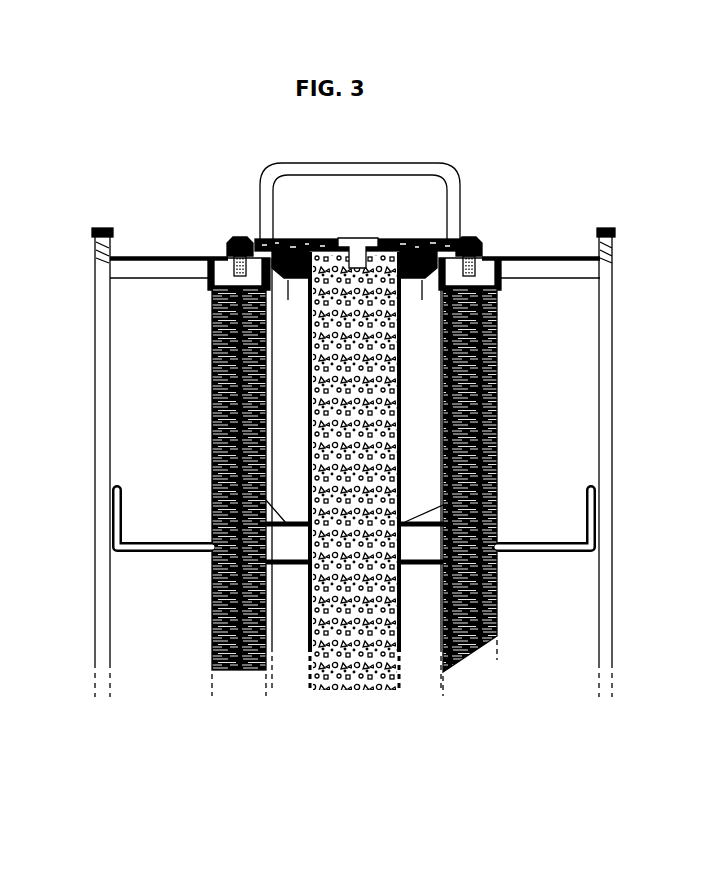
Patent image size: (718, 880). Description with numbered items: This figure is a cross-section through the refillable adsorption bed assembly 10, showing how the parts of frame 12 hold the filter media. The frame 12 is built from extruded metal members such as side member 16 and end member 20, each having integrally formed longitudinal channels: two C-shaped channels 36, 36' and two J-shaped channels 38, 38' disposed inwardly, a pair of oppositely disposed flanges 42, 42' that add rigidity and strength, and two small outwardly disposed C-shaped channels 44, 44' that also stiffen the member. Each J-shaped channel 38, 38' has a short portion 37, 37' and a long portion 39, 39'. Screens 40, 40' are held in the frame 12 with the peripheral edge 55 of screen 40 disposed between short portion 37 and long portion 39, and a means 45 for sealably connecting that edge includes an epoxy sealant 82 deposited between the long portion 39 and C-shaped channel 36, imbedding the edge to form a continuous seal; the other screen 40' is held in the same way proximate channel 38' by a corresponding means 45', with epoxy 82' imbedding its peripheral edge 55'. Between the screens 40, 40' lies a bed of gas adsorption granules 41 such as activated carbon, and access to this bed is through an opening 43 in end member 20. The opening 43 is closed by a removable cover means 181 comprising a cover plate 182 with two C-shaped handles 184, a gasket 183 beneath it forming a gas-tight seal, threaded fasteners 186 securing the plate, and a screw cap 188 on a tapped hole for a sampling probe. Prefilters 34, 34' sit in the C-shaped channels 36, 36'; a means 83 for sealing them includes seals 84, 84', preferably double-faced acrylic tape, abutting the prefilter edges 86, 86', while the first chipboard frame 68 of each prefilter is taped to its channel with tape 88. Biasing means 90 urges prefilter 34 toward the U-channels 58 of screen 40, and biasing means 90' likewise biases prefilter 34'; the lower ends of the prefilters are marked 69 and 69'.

The adsorption bed assembly 10 is at (592, 173).
The frame 12 is at (615, 312).
The side member 16 is at (614, 517).
The end member 20 is at (96, 238).
The prefilter 34 is at (211, 492).
The prefilter 34' is at (503, 492).
The C-shaped channel 36 is at (169, 239).
The C-shaped channel 36' is at (541, 235).
The short portion 37 is at (259, 154).
The short portion 37' is at (455, 170).
The J-shaped channel 38 is at (358, 221).
The J-shaped channel 38' is at (423, 160).
The long portion 39 is at (292, 472).
The long portion 39' is at (418, 472).
The screen 40 is at (275, 690).
The screen 40' is at (426, 690).
The bed of gas adsorption granules 41 is at (358, 672).
The flange 42 is at (74, 247).
The flange 42' is at (639, 242).
The opening 43 is at (335, 325).
The C-shaped channel 44 is at (218, 235).
The C-shaped channel 44' is at (507, 235).
The means for sealably connecting peripheral edge 45 is at (330, 170).
The means for sealably connecting peripheral edge 45' is at (392, 170).
The peripheral edge 55 is at (327, 224).
The peripheral edge 55' is at (392, 224).
The U-channel 58 is at (212, 488).
The first chipboard frame 68 is at (212, 618).
The electrode end 69 is at (483, 699).
The electrode end 69' is at (218, 703).
The epoxy sealant 82 is at (287, 475).
The epoxy 82' is at (421, 475).
The means for sealably connecting prefilters 83 is at (178, 278).
The seal 84 is at (290, 304).
The seal 84' is at (419, 302).
The edge 86 is at (188, 356).
The edge 86' is at (524, 345).
The tape 88 is at (213, 293).
The biasing means 90 is at (164, 550).
The biasing means 90' is at (544, 541).
The removable cover means 181 is at (182, 160).
The cover plate 182 is at (450, 237).
The gasket 183 is at (320, 190).
The C-shaped handle 184 is at (297, 162).
The threaded fastener 186 is at (240, 236).
The screw cap 188 is at (363, 238).